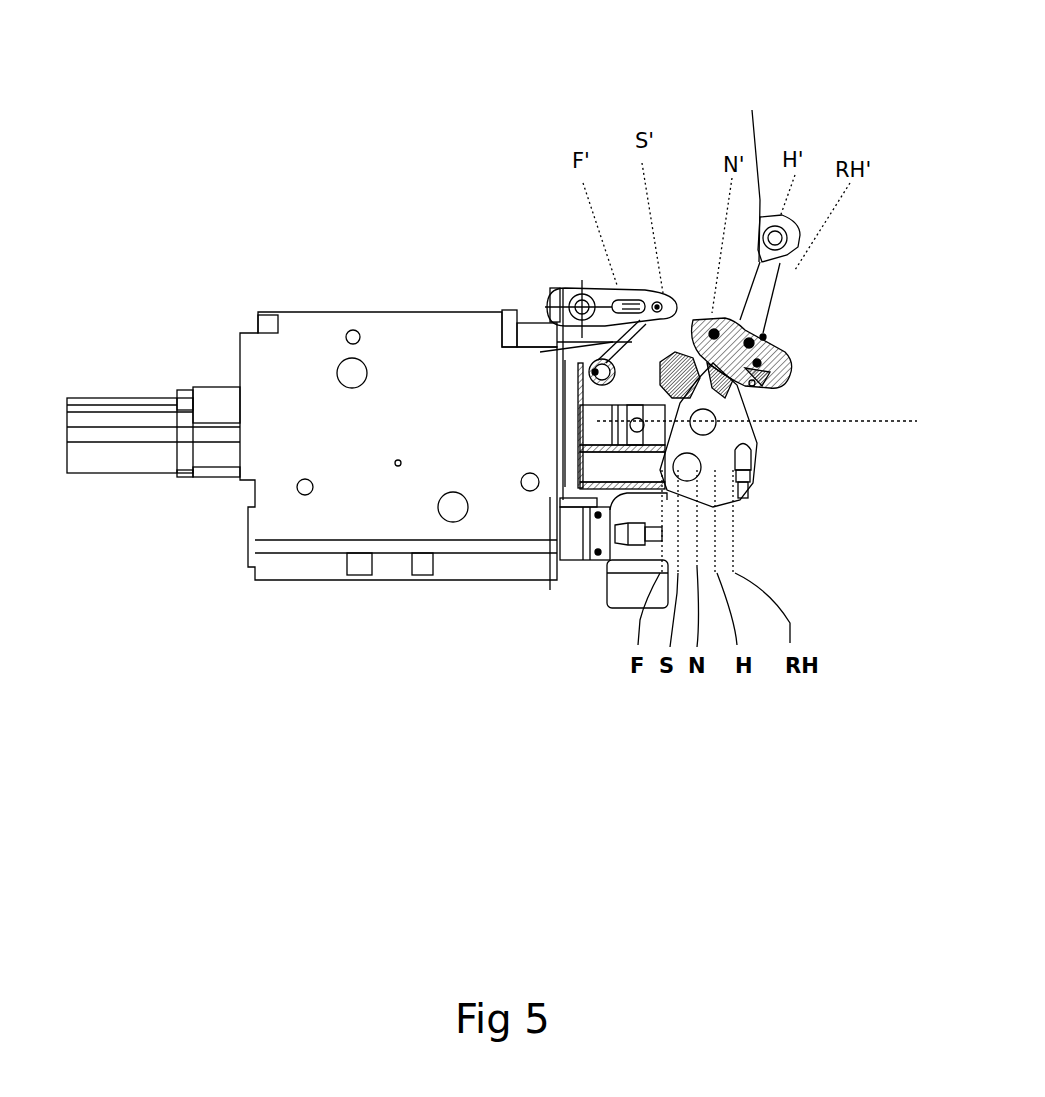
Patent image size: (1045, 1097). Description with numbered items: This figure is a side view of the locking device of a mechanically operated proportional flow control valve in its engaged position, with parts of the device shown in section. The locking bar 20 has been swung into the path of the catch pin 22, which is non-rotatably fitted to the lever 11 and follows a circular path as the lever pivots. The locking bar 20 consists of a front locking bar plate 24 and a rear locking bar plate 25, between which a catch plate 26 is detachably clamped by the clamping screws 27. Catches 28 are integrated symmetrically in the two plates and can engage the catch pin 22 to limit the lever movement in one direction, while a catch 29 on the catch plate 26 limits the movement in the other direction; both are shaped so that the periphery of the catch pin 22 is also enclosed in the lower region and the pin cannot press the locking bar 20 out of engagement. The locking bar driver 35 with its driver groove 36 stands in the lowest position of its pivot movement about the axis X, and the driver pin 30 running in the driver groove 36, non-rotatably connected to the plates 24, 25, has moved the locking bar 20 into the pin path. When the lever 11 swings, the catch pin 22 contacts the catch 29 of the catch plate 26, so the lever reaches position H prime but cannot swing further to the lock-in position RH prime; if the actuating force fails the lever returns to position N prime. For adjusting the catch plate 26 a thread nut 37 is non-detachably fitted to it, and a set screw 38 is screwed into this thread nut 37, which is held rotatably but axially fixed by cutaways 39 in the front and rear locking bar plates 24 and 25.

The lever 11 is at (788, 255).
The locking bar 20 is at (690, 320).
The catch pin 22 is at (735, 490).
The front locking bar plate 24 is at (556, 345).
The rear locking bar plate 25 is at (755, 343).
The catch plate 26 is at (763, 337).
The clamping screws 27 is at (715, 333).
The catches 28 is at (680, 365).
The catch 29 is at (743, 387).
The driver pin 30 is at (657, 303).
The locking bar driver 35 is at (602, 297).
The driver groove 36 is at (632, 300).
The thread nut 37 is at (760, 363).
The set screw 38 is at (760, 367).
The cutaways 39 is at (752, 383).
The axis X is at (550, 303).